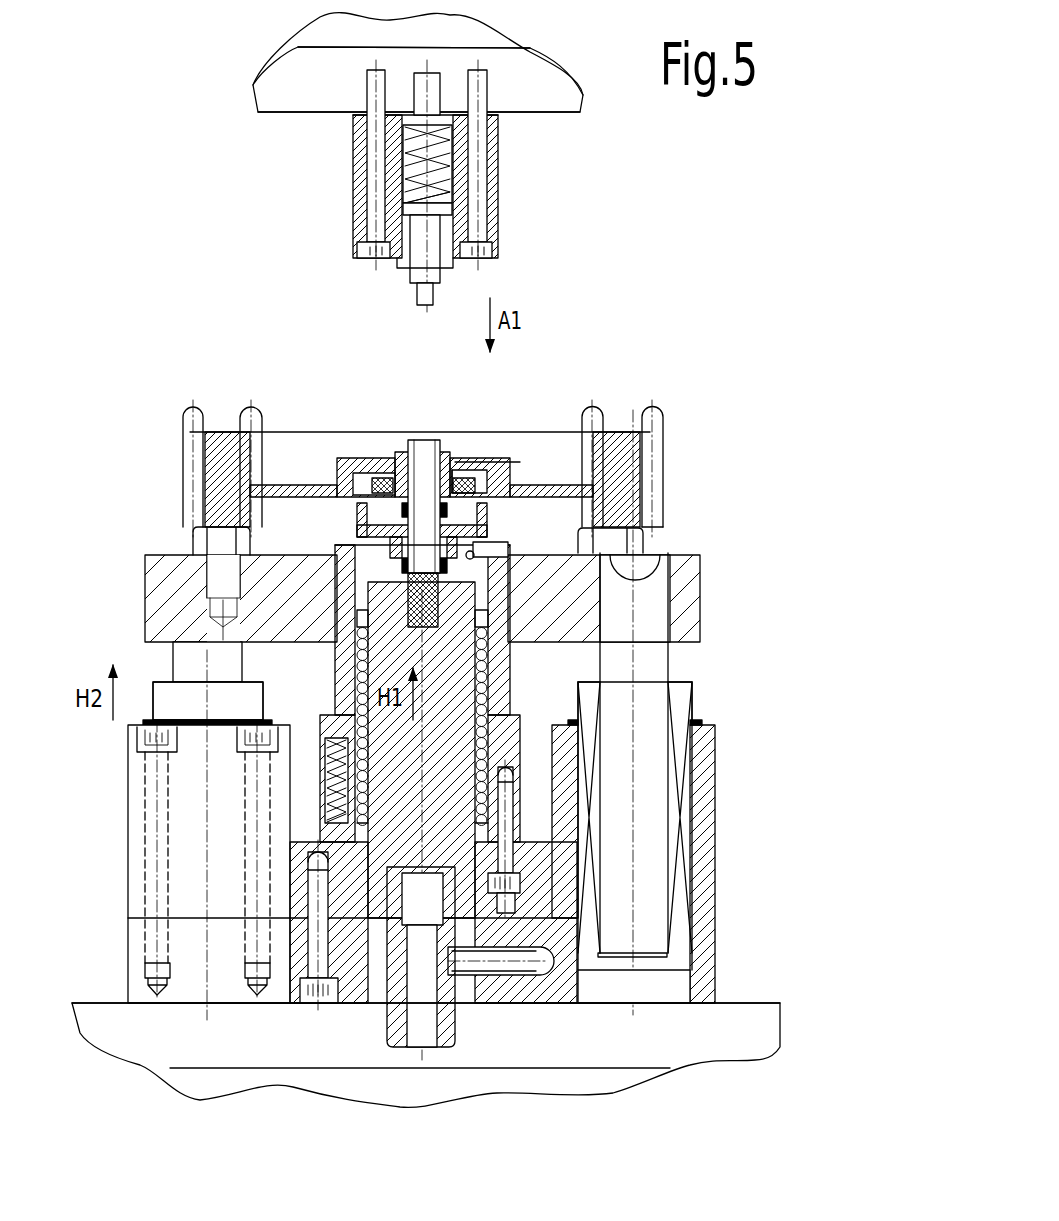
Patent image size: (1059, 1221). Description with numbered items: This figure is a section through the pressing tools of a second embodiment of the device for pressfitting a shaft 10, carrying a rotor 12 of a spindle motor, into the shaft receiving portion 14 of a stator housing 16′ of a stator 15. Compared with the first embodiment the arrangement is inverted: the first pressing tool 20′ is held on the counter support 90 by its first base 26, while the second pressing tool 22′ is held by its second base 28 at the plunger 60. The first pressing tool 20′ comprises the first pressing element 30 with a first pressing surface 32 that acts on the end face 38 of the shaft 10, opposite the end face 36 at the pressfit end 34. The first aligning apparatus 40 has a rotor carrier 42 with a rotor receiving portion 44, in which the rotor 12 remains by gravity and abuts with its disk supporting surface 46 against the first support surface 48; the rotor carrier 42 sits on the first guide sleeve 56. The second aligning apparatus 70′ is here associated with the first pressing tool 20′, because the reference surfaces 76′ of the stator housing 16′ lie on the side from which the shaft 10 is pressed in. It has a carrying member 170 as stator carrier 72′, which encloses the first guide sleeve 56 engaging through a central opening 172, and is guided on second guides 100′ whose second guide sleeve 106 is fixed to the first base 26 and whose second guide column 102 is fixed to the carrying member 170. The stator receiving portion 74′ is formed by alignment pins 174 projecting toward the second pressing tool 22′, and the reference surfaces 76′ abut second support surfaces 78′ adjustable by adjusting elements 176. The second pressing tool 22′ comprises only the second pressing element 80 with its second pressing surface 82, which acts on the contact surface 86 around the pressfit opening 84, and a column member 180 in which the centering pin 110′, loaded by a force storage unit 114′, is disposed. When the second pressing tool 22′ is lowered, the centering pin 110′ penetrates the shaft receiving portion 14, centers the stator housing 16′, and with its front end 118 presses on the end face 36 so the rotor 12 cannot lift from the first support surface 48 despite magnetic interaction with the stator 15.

The plunger 60 is at (448, 38).
The second base 28 is at (530, 88).
The second pressing tool 22′ is at (454, 197).
The second pressing element 80 is at (447, 240).
The force storage unit 114′ is at (403, 180).
The column member 180 is at (458, 182).
The centering pin 110′ is at (422, 267).
The front end 118 is at (425, 303).
The second pressing surface 82 is at (450, 277).
The alignment pins 174 is at (657, 432).
The adjusting elements 176 is at (733, 510).
The rotor receiving portion 44 is at (456, 461).
The disk supporting surface 46 is at (338, 478).
The rotor carrier 42 is at (613, 517).
The end face 36 is at (424, 462).
The first support surface 48 is at (518, 487).
The stator housing 16′ is at (540, 487).
The stator 15 is at (477, 470).
The shaft receiving portion 14 is at (443, 507).
The pressfit opening 84 is at (407, 470).
The contact surface 86 is at (417, 487).
The pressfit end 34 is at (430, 493).
The reference surfaces 76′ is at (190, 570).
The second support surfaces 78′ is at (207, 515).
The shaft 10 is at (426, 607).
The stator carrier 72′ is at (173, 583).
The carrying member 170 is at (690, 628).
The first pressing surface 32 is at (401, 688).
The end face 38 is at (493, 557).
The first aligning apparatus 40 is at (322, 675).
The second aligning apparatus 70′ is at (150, 697).
The first pressing element 30 is at (440, 582).
The central opening 172 is at (480, 625).
The first guide sleeve 56 is at (503, 747).
The first pressing tool 20′ is at (513, 707).
The second guides 100′ is at (673, 712).
The second guide column 102 is at (637, 747).
The second guide sleeve 106 is at (703, 845).
The first base 26 is at (680, 1037).
The counter support 90 is at (573, 1080).
The rotor 12 is at (342, 510).
The stator receiving portion 74′ is at (620, 425).